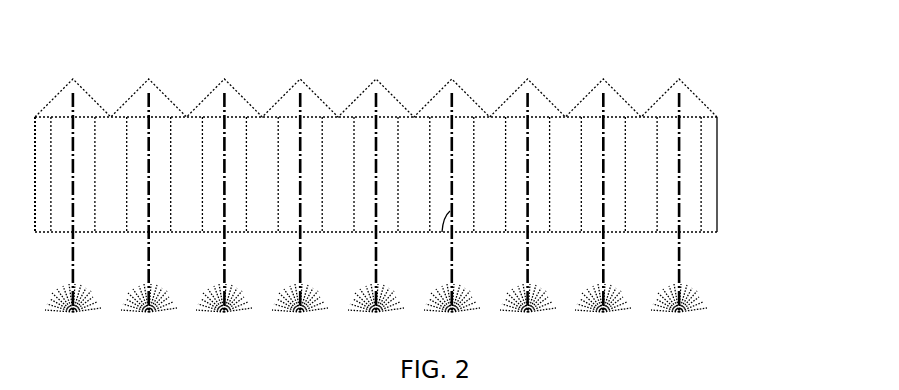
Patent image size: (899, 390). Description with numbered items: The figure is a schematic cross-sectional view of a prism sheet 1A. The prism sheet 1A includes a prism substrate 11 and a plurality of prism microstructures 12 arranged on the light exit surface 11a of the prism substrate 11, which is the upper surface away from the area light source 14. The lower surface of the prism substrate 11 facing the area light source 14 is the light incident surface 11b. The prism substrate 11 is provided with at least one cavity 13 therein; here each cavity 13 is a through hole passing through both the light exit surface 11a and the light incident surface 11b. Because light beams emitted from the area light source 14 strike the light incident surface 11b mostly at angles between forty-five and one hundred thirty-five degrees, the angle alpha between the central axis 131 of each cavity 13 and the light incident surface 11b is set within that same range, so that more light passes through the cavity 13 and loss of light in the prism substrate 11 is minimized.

The prism sheet 1A is at (82, 31).
The prism substrate 11 is at (653, 200).
The light exit surface 11a is at (715, 117).
The light incident surface 11b is at (820, 266).
The prism microstructures 12 is at (689, 109).
The cavity 13 is at (703, 148).
The central axis 131 is at (689, 182).
The area light source 14 is at (707, 308).